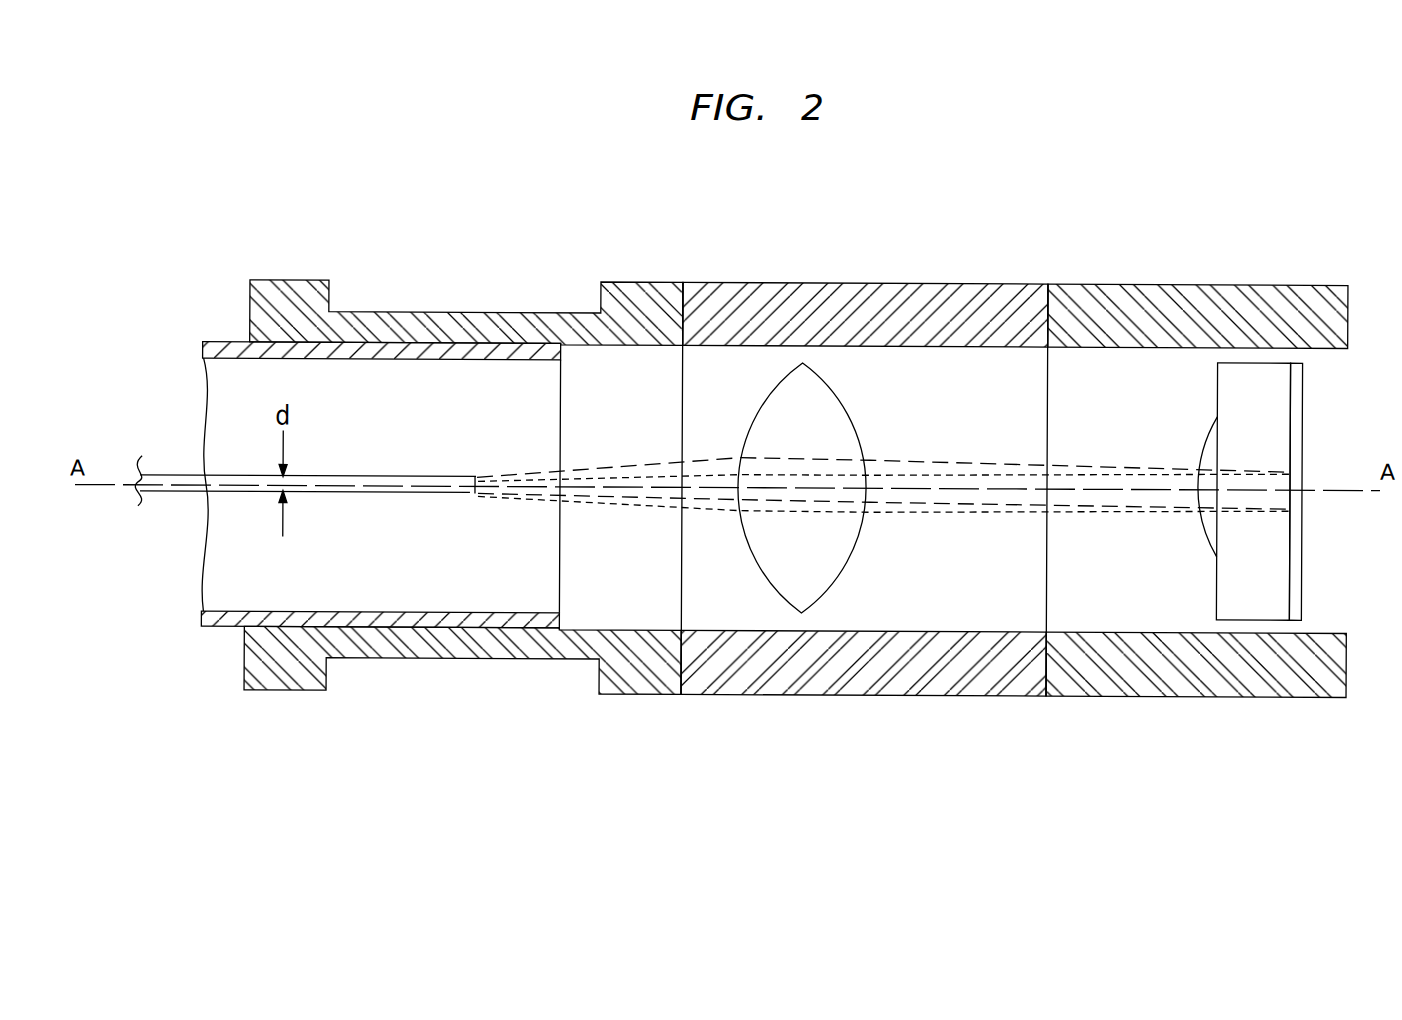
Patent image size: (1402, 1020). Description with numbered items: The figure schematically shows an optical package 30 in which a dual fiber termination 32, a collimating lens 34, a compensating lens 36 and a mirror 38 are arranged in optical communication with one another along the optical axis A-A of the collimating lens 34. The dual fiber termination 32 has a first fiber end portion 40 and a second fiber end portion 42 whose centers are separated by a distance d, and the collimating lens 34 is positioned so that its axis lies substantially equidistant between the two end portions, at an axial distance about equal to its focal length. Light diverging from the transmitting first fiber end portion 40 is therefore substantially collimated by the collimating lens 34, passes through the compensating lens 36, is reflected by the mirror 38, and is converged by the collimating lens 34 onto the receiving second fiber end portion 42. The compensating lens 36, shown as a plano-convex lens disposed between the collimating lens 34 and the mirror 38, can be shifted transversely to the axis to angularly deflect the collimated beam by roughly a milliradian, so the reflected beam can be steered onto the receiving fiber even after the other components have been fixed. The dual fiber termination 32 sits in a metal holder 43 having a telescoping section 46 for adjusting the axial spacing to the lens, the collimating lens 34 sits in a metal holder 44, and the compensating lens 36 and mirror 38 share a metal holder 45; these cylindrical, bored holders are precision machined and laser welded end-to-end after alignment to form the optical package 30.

The optical package 30 is at (765, 251).
The dual fiber termination 32 is at (357, 467).
The collimating lens 34 is at (840, 392).
The compensating lens 36 is at (1240, 617).
The mirror 38 is at (1293, 617).
The first fiber end portion 40 is at (436, 478).
The second fiber end portion 42 is at (437, 494).
The metal holder 43 is at (361, 281).
The metal holder 44 is at (970, 280).
The metal holder 45 is at (1170, 279).
The telescoping section 46 is at (212, 342).